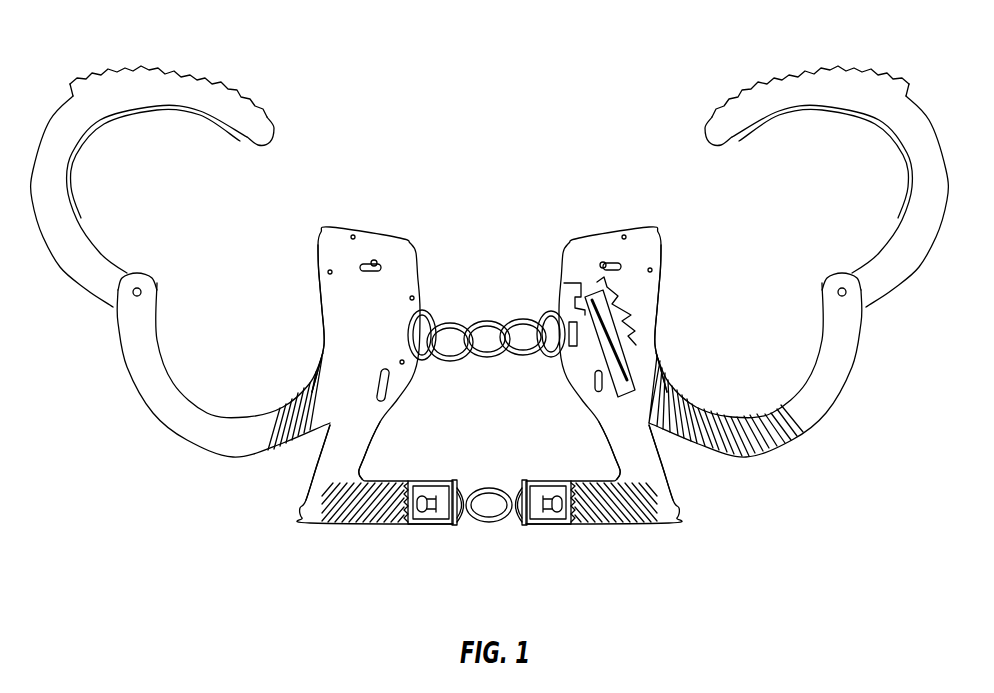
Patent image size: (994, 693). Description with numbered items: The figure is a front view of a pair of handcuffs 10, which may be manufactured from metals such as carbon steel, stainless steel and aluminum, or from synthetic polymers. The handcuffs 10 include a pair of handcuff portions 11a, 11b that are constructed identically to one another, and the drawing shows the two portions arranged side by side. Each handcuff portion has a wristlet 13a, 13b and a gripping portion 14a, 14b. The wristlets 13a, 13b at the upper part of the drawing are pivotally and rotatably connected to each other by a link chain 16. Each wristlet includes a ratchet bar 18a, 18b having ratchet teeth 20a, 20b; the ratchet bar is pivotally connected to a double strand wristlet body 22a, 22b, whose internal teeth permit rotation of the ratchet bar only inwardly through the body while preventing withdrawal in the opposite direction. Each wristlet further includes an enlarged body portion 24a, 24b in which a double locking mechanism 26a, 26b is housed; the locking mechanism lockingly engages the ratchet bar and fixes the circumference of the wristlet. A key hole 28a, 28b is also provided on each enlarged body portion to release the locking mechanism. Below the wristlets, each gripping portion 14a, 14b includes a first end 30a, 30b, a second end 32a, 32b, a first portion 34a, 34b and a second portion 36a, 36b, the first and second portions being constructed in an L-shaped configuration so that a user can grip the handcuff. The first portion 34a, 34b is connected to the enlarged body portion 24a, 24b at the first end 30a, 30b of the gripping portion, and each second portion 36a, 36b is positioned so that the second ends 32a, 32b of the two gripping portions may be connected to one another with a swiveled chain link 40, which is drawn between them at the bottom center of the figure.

The handcuffs 10 is at (497, 180).
The handcuff portion 11a is at (377, 262).
The handcuff portion 11b is at (648, 228).
The wristlet 13a is at (142, 387).
The wristlet 13b is at (843, 367).
The gripping portion 14a is at (375, 517).
The gripping portion 14b is at (628, 517).
The link chain 16 is at (500, 320).
The ratchet bar 18a is at (133, 95).
The ratchet bar 18b is at (852, 95).
The ratchet teeth 20a is at (213, 102).
The ratchet teeth 20b is at (778, 86).
The double strand wristlet body 22a is at (220, 442).
The double strand wristlet body 22b is at (753, 447).
The enlarged body portion 24a is at (328, 353).
The enlarged body portion 24b is at (648, 352).
The double locking mechanism 26a is at (382, 395).
The double locking mechanism 26b is at (598, 388).
The key hole 28a is at (372, 265).
The key hole 28b is at (606, 263).
The first end 30a is at (315, 497).
The first end 30b is at (627, 440).
The second end 32a is at (442, 493).
The second end 32b is at (537, 485).
The first portion 34a is at (325, 437).
The first portion 34b is at (660, 493).
The second portion 36a is at (318, 518).
The second portion 36b is at (580, 515).
The swiveled chain link 40 is at (463, 527).